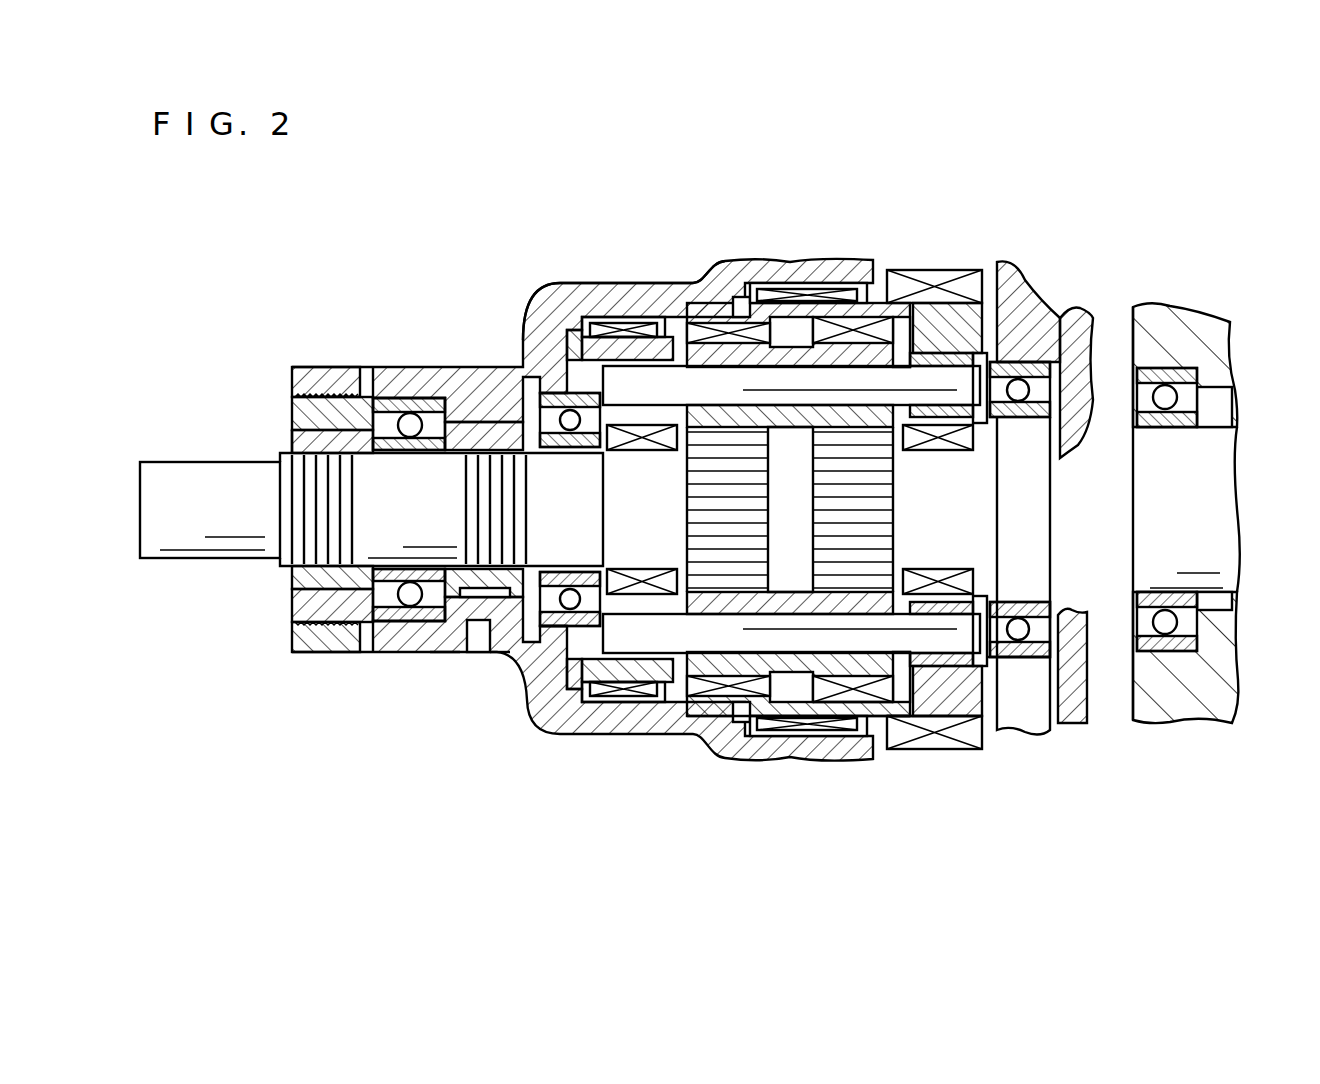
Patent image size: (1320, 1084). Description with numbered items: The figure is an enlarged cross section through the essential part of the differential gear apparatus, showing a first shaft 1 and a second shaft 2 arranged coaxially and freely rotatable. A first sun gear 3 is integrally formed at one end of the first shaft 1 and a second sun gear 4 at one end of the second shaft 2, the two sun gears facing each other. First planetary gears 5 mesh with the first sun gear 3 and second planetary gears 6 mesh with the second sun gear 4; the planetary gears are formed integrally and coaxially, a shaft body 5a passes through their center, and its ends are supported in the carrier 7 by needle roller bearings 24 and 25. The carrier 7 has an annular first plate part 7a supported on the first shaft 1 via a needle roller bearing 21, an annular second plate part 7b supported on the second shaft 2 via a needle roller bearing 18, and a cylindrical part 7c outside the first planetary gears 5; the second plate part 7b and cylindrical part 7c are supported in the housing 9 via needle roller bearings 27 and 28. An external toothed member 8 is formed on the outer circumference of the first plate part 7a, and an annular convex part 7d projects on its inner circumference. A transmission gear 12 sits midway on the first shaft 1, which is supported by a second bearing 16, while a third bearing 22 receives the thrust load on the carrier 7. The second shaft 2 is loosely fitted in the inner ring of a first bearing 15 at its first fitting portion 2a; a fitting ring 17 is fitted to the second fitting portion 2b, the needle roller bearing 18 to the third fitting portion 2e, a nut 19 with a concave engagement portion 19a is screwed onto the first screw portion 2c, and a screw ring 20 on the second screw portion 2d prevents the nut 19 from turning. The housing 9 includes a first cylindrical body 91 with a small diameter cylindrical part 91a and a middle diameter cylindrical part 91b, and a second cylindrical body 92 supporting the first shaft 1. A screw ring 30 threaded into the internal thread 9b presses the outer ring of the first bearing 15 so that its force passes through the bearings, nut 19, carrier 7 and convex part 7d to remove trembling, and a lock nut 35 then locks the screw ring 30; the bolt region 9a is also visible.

The first shaft 1 is at (1215, 518).
The second shaft 2 is at (190, 560).
The first fitting portion 2a is at (395, 412).
The second fitting portion 2b is at (562, 362).
The first screw portion 2c is at (490, 430).
The second screw portion 2d is at (300, 468).
The third fitting portion 2e is at (605, 375).
The first sun gear 3 is at (873, 580).
The second sun gear 4 is at (707, 577).
The first planetary gears 5 is at (865, 320).
The shaft body 5a is at (788, 372).
The second planetary gears 6 is at (707, 330).
The carrier 7 is at (962, 722).
The first plate part 7a is at (993, 665).
The second plate part 7b is at (563, 670).
The cylindrical part 7c is at (780, 710).
The annular convex part 7d is at (1003, 668).
The external toothed member 8 is at (932, 745).
The housing 9 is at (598, 737).
The bolt 9a is at (480, 653).
The internal thread 9b is at (292, 396).
The transmission gear 12 is at (1090, 330).
The first bearing 15 is at (427, 400).
The second bearing 16 is at (1165, 370).
The fitting ring 17 is at (565, 395).
The needle roller bearing 18 is at (645, 443).
The nut 19 is at (443, 653).
The concave engagement portion 19a is at (498, 653).
The screw ring 20 is at (303, 442).
The needle roller bearing 21 is at (937, 447).
The third bearing 22 is at (1015, 365).
The needle roller bearing 24 is at (945, 343).
The needle roller bearing 25 is at (647, 360).
The needle roller bearing 27 is at (620, 690).
The needle roller bearing 28 is at (818, 730).
The screw ring 30 is at (355, 398).
The lock nut 35 is at (317, 372).
The first cylindrical body 91 is at (587, 283).
The small diameter cylindrical part 91a is at (455, 380).
The middle diameter cylindrical part 91b is at (681, 283).
The second cylindrical body 92 is at (1220, 323).